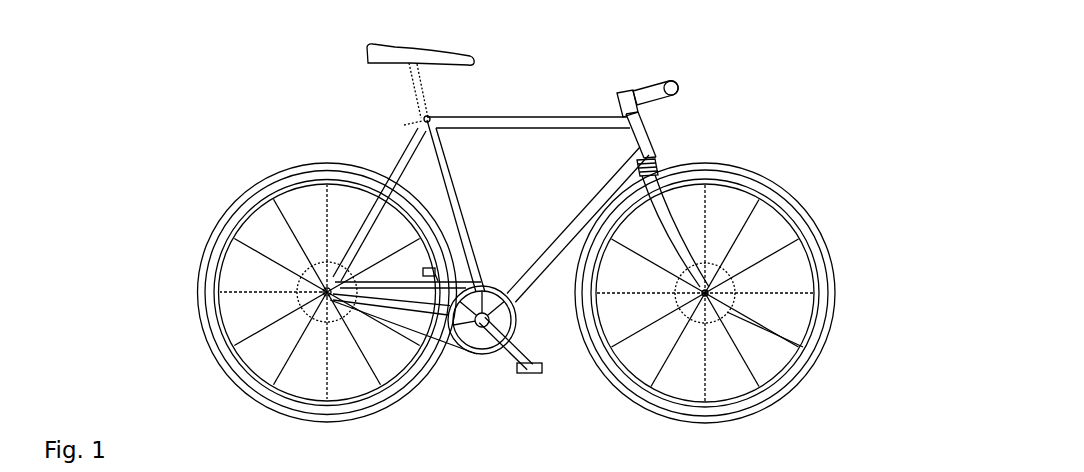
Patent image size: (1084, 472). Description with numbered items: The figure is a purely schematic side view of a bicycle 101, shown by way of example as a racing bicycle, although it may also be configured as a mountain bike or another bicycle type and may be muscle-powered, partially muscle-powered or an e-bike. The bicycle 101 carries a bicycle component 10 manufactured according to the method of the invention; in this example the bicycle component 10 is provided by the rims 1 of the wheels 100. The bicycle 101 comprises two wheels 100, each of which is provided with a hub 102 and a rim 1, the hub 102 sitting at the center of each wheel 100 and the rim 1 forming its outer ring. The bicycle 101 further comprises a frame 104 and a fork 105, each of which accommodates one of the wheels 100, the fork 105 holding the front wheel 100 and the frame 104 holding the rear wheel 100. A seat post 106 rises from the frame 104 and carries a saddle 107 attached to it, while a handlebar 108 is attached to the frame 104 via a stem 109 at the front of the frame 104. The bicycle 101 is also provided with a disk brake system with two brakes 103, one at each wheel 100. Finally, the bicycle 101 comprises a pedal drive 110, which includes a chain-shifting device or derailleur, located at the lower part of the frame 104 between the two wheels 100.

The rim 1 is at (217, 253).
The bicycle component 10 is at (228, 208).
The wheel 100 is at (197, 278).
The bicycle 101 is at (206, 42).
The hub 102 is at (308, 318).
The brake 103 is at (300, 302).
The frame 104 is at (580, 117).
The fork 105 is at (663, 202).
The seat post 106 is at (413, 79).
The saddle 107 is at (367, 52).
The handlebar 108 is at (673, 83).
The stem 109 is at (650, 90).
The pedal drive 110 is at (533, 368).